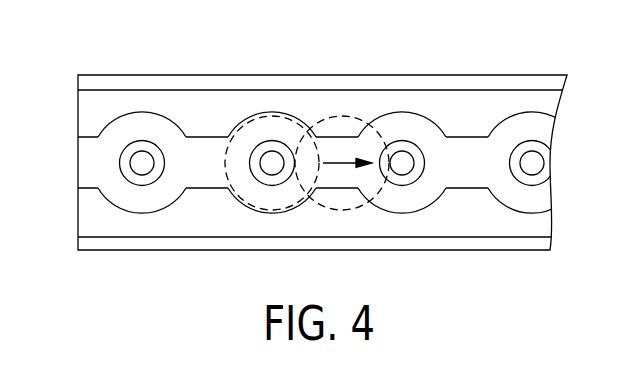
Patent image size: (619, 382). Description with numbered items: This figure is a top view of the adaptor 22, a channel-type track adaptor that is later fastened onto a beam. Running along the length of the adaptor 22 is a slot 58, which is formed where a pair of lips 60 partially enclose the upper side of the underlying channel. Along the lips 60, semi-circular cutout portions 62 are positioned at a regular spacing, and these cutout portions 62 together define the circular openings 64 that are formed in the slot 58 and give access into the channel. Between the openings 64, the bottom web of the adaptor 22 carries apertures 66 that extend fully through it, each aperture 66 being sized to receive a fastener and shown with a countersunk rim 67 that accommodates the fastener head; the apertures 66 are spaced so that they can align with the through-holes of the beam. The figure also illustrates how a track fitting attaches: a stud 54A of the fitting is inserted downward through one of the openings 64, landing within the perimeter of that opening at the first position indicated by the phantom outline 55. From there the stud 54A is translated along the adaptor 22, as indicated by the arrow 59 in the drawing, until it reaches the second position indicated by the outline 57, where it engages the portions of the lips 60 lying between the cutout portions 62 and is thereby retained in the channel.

The adaptor 22 is at (510, 75).
The stud 54A is at (258, 116).
The outline showing first position 55 is at (250, 208).
The outline showing second position 57 is at (322, 210).
The slot 58 is at (98, 165).
The indexing direction arrow 59 is at (334, 166).
The lips 60 is at (98, 112).
The cutout portions 62 is at (143, 112).
The openings 64 is at (163, 135).
The apertures 66 is at (413, 158).
The countersunk rim 67 is at (400, 141).